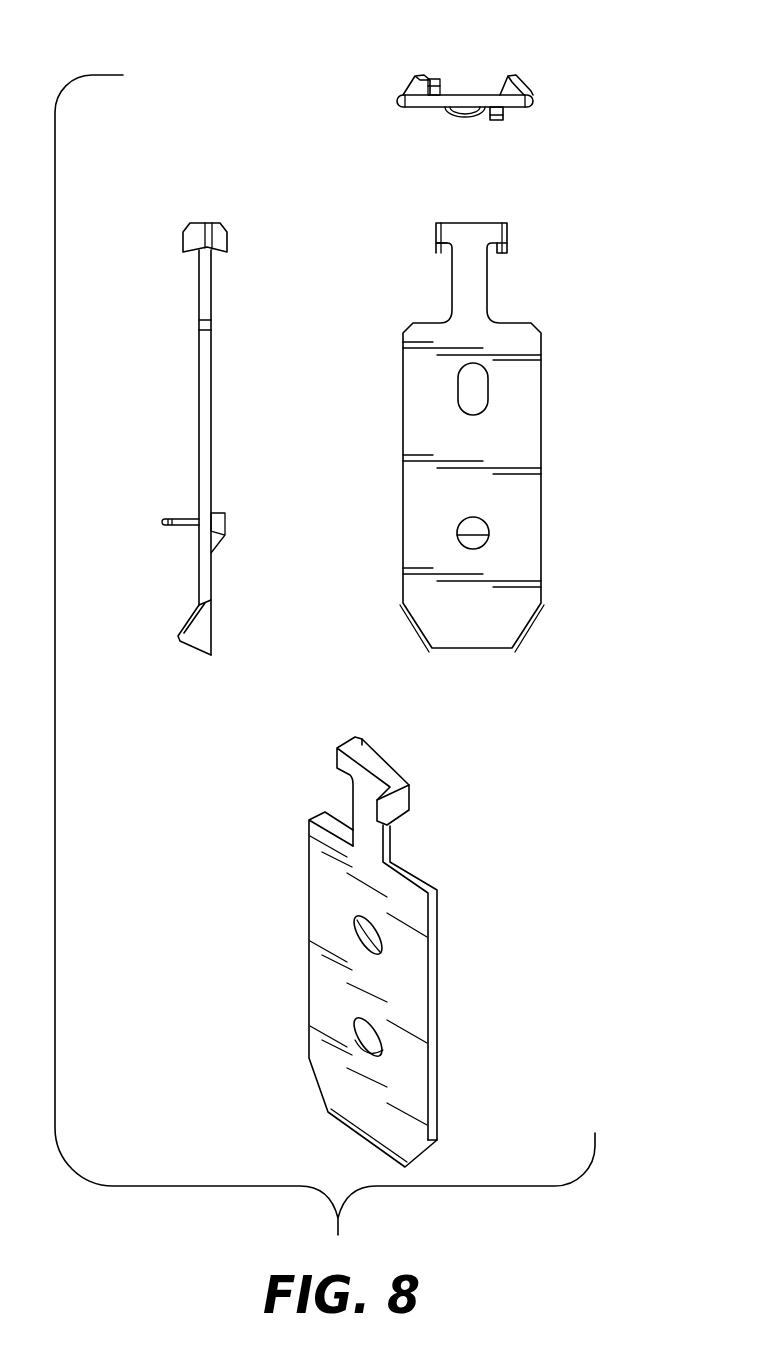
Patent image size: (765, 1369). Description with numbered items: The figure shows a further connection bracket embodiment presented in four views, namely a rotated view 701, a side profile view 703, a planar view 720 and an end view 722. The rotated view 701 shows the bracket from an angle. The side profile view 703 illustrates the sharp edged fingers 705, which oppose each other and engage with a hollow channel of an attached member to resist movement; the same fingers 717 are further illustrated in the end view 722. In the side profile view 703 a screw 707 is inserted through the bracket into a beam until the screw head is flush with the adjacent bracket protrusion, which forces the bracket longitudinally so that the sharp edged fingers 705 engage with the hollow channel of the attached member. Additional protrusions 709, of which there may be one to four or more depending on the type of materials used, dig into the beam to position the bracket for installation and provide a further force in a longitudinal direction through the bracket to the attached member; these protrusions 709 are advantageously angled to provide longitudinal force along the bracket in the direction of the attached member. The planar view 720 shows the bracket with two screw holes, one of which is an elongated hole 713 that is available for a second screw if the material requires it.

The rotated view of the bracket 701 is at (445, 870).
The bracket side profile view 703 is at (202, 431).
The sharp edged fingers 705 is at (225, 228).
The screw 707 is at (225, 518).
The protrusions 709 is at (198, 647).
The elongated hole 713 is at (488, 388).
The fingers 717 is at (503, 120).
The planar view of the bracket 720 is at (538, 435).
The end view of the bracket 722 is at (501, 86).